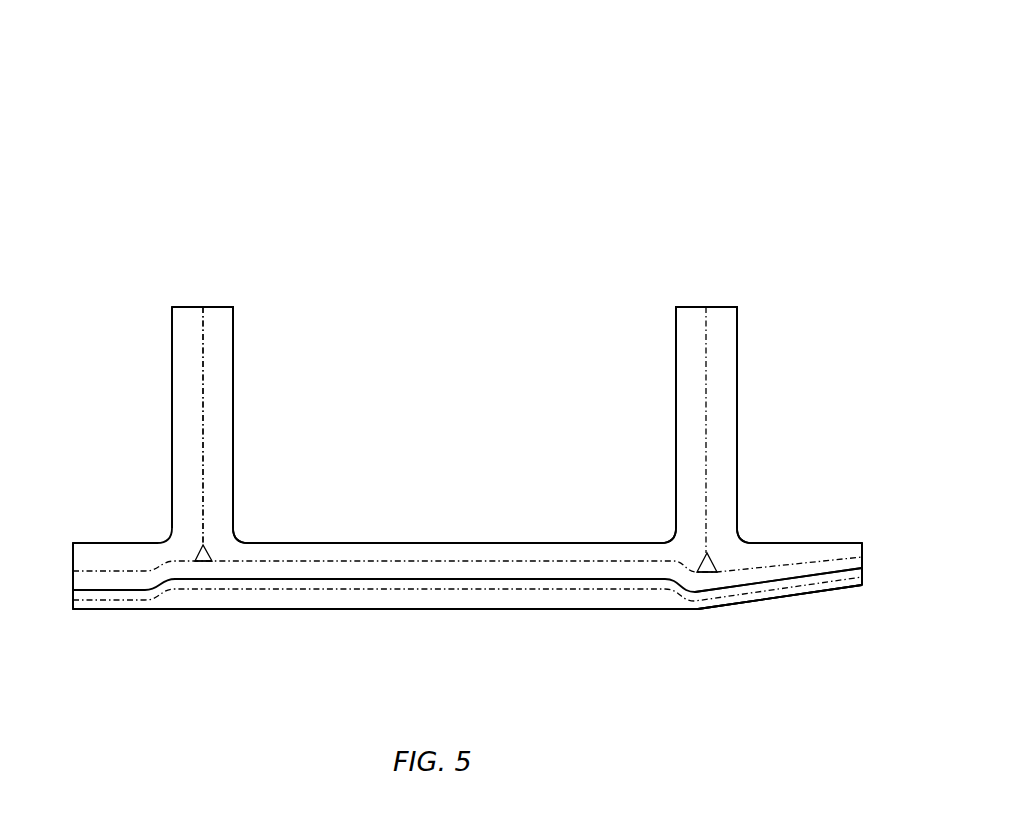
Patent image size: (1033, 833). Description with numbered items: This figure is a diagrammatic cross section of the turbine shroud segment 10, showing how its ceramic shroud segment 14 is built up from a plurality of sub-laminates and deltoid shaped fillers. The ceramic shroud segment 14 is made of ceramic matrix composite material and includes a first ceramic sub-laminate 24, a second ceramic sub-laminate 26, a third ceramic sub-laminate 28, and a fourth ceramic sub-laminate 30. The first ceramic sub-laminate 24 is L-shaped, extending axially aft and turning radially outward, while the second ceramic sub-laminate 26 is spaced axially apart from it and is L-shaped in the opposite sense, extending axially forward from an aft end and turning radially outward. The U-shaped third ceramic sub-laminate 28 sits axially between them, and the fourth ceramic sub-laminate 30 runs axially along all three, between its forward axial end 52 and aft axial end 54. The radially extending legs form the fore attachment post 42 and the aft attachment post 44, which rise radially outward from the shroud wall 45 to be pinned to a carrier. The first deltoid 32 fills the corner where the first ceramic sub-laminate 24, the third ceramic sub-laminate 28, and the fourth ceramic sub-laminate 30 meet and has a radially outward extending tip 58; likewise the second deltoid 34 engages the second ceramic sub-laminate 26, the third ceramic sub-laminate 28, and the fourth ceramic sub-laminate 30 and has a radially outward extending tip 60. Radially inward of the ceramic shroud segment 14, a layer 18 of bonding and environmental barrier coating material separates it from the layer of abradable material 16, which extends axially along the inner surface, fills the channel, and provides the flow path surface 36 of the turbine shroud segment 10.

The turbine shroud segment 10 is at (110, 120).
The ceramic shroud segment 14 is at (263, 380).
The layer of abradable material 16 is at (620, 605).
The layer 18 is at (874, 570).
The first ceramic sub-laminate 24 is at (184, 298).
The second ceramic sub-laminate 26 is at (738, 424).
The third ceramic sub-laminate 28 is at (230, 425).
The fourth ceramic sub-laminate 30 is at (80, 585).
The first deltoid 32 is at (204, 580).
The second deltoid 34 is at (708, 592).
The flow path surface 36 is at (787, 597).
The fore attachment post 42 is at (205, 288).
The aft attachment post 44 is at (706, 288).
The shroud wall 45 is at (460, 530).
The forward axial end 52 is at (73, 578).
The aft axial end 54 is at (864, 560).
The radially outward extending tip 58 is at (205, 544).
The radially outward extending tip 60 is at (709, 553).